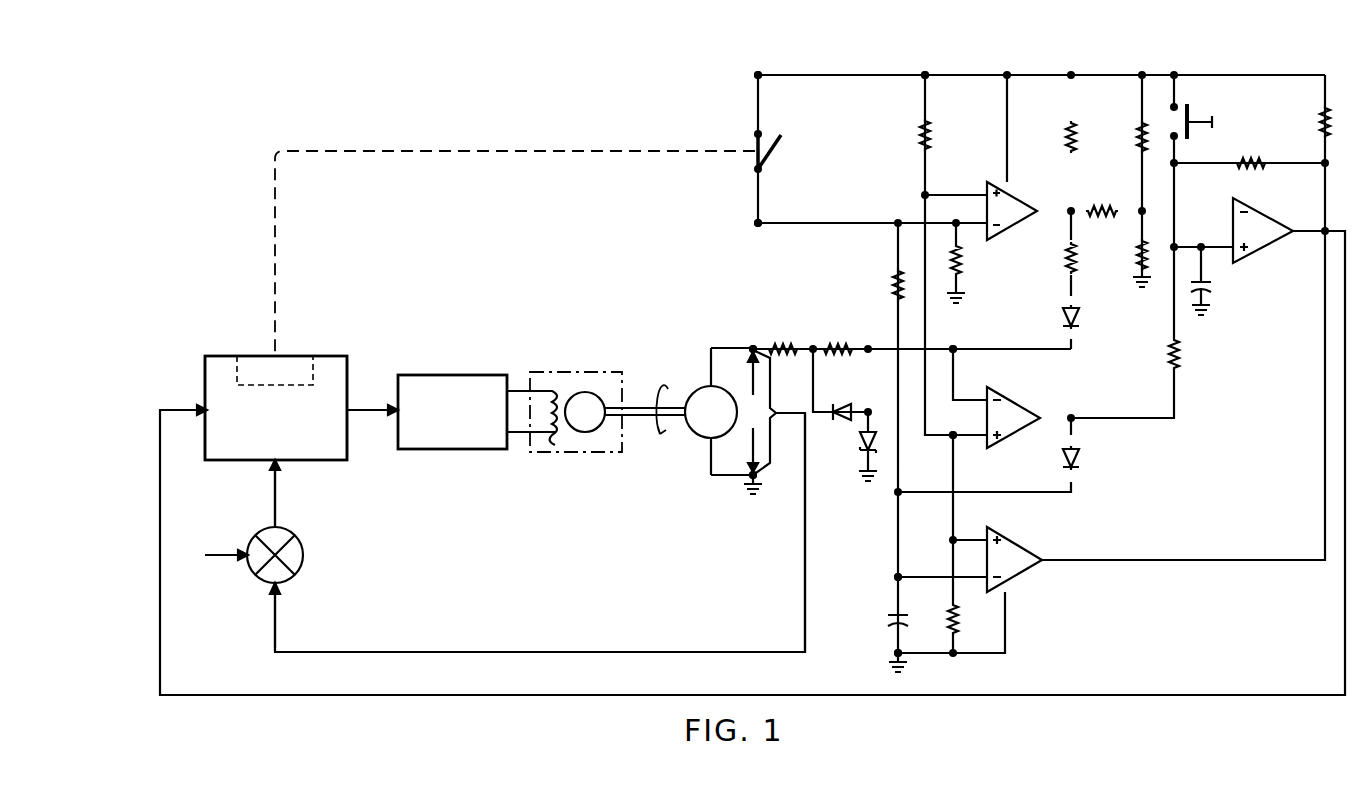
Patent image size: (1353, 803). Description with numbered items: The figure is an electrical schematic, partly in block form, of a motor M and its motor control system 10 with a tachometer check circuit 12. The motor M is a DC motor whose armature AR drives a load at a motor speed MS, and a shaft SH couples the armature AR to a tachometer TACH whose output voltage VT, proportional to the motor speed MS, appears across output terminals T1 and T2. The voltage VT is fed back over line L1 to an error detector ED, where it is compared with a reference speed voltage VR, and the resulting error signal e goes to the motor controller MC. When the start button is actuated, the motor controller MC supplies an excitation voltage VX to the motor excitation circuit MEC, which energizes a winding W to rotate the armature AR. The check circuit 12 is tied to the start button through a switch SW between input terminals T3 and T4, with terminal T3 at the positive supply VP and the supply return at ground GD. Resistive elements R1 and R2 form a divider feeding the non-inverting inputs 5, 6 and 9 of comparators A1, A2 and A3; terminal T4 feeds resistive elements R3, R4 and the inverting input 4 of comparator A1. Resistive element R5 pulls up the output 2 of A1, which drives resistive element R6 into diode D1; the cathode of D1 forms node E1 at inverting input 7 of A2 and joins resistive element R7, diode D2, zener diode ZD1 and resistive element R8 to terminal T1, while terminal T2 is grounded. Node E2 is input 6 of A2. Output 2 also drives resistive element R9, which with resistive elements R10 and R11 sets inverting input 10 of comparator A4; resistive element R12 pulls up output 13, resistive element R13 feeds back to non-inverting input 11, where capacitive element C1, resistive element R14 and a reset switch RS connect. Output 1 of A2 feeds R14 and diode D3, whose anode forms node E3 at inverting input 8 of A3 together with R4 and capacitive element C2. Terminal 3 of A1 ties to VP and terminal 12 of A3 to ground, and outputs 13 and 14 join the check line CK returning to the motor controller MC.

The motor controller MC is at (315, 356).
The motor excitation circuit MEC is at (433, 375).
The motor excitation voltage VX is at (372, 407).
The motor M is at (564, 400).
The winding W is at (542, 422).
The armature AR is at (599, 375).
The shaft SH is at (640, 406).
The motor speed MS is at (661, 398).
The tachometer TACH is at (711, 412).
The output terminal T1 is at (750, 346).
The output terminal T2 is at (750, 481).
The input terminal T3 is at (756, 74).
The input terminal T4 is at (757, 224).
The tachometer output voltage VT is at (754, 412).
The switch SW is at (770, 131).
The positive power supply voltage VP is at (928, 75).
The reset switch RS is at (1189, 107).
The resistive element R1 is at (916, 136).
The resistive element R2 is at (945, 624).
The resistive element R3 is at (965, 259).
The resistive element R4 is at (890, 282).
The resistive element R5 is at (1066, 139).
The resistive element R6 is at (1066, 254).
The resistive element R7 is at (835, 343).
The resistive element R8 is at (788, 342).
The resistive element R9 is at (1108, 208).
The resistive element R10 is at (1135, 143).
The resistive element R11 is at (1137, 257).
The resistive element R12 is at (1318, 126).
The resistive element R13 is at (1243, 162).
The resistive element R14 is at (1167, 360).
The capacitive element C1 is at (1210, 285).
The capacitive element C2 is at (886, 618).
The diode D1 is at (1058, 314).
The diode D2 is at (846, 403).
The diode D3 is at (1080, 461).
The zener diode ZD1 is at (859, 442).
The comparator A1 is at (1013, 212).
The comparator A2 is at (1014, 413).
The comparator A3 is at (1019, 554).
The comparator A4 is at (1260, 225).
The voltage node E1 is at (957, 348).
The voltage node E2 is at (952, 434).
The voltage node E3 is at (896, 578).
The ground terminal GD is at (882, 668).
The check line CK is at (970, 695).
The error detector ED is at (303, 555).
The reference speed voltage signal VR is at (206, 555).
The error signal e is at (284, 498).
The voltage transmission line L1 is at (496, 650).
The motor control system 10 is at (1216, 202).
The tachometer check circuit 12 is at (1200, 461).
The output terminal 1 is at (1051, 405).
The output terminal 2 is at (1045, 197).
The terminal 3 is at (1015, 185).
The inverting input terminal 4 is at (975, 240).
The non-inverting input terminal 5 is at (971, 185).
The non-inverting input terminal 6 is at (977, 450).
The inverting input terminal 7 is at (977, 391).
The inverting input terminal 8 is at (977, 591).
The non-inverting input terminal 9 is at (977, 531).
The non-inverting input terminal 11 is at (1229, 262).
The output terminal 13 is at (1305, 215).
The output terminal 14 is at (1055, 548).